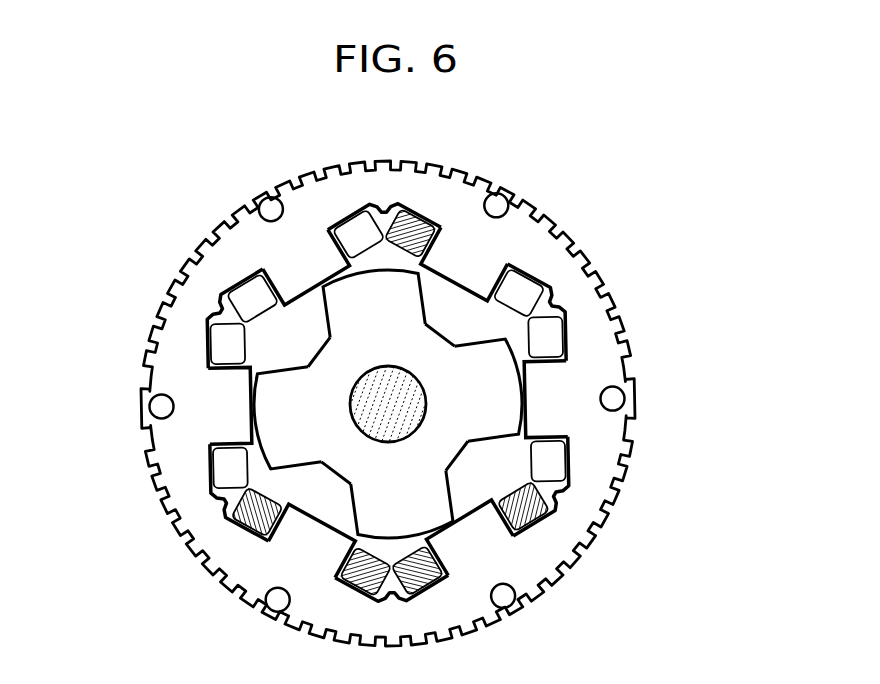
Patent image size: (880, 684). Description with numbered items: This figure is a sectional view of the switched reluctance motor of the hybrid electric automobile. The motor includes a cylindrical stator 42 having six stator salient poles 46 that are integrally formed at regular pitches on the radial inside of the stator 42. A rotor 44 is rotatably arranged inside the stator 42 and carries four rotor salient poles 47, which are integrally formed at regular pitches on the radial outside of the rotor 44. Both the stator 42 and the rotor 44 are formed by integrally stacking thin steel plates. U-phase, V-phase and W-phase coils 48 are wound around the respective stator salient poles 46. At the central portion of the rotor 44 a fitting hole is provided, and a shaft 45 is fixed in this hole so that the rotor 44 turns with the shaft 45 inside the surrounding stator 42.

The cylindrical stator 42 is at (544, 205).
The rotor 44 is at (437, 333).
The shaft 45 is at (237, 522).
The stator salient pole 46 is at (302, 267).
The rotor salient pole 47 is at (367, 303).
The coil 48 is at (410, 228).